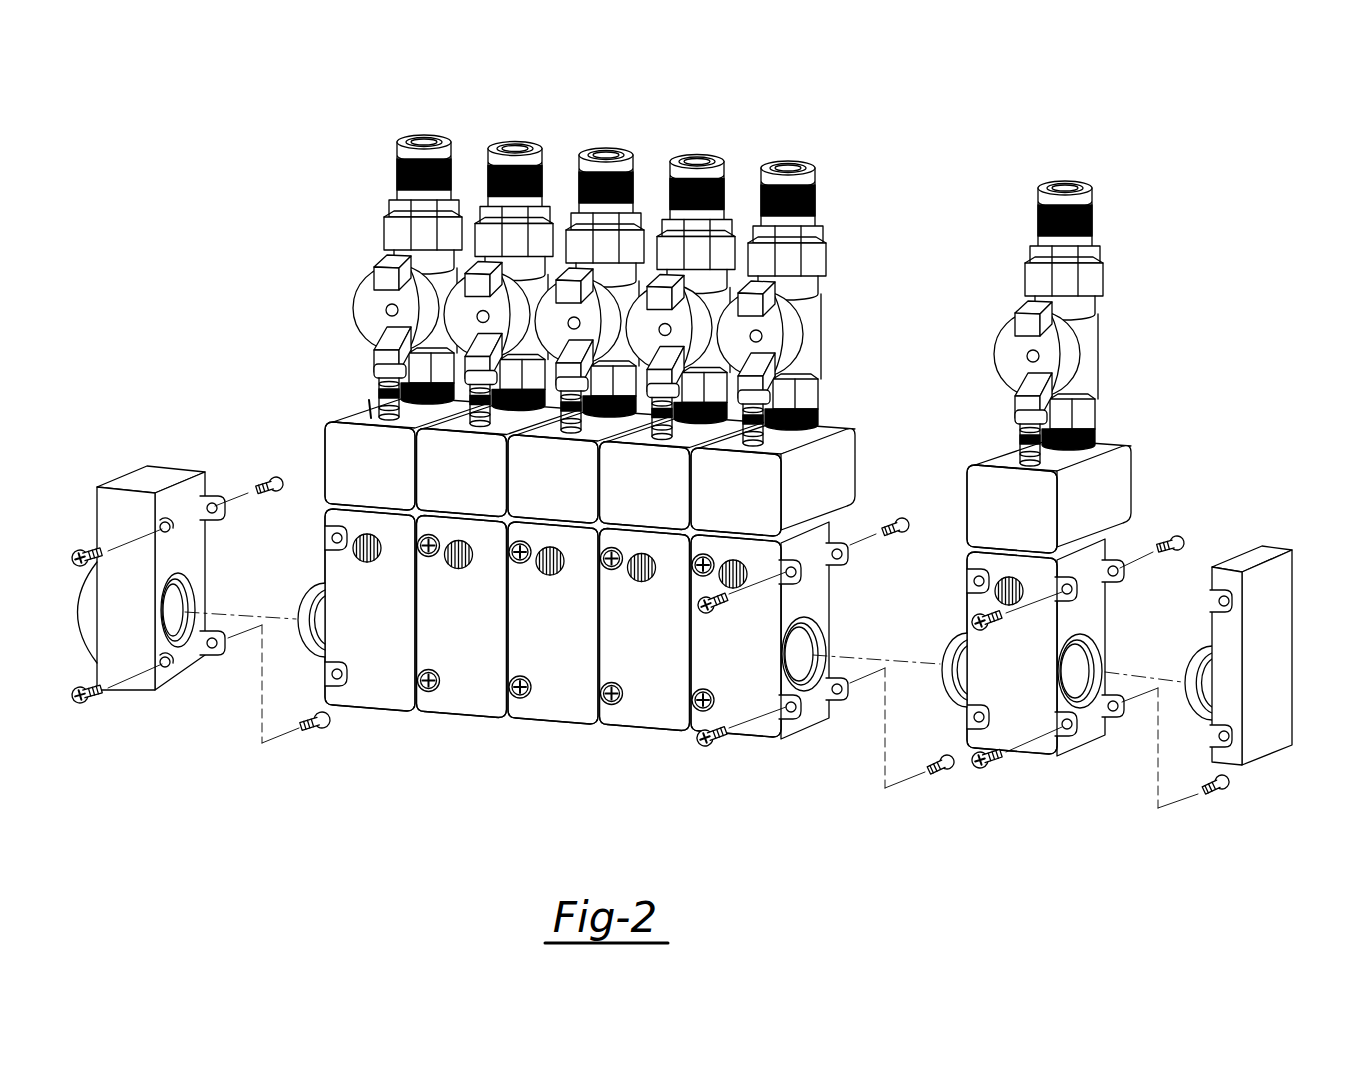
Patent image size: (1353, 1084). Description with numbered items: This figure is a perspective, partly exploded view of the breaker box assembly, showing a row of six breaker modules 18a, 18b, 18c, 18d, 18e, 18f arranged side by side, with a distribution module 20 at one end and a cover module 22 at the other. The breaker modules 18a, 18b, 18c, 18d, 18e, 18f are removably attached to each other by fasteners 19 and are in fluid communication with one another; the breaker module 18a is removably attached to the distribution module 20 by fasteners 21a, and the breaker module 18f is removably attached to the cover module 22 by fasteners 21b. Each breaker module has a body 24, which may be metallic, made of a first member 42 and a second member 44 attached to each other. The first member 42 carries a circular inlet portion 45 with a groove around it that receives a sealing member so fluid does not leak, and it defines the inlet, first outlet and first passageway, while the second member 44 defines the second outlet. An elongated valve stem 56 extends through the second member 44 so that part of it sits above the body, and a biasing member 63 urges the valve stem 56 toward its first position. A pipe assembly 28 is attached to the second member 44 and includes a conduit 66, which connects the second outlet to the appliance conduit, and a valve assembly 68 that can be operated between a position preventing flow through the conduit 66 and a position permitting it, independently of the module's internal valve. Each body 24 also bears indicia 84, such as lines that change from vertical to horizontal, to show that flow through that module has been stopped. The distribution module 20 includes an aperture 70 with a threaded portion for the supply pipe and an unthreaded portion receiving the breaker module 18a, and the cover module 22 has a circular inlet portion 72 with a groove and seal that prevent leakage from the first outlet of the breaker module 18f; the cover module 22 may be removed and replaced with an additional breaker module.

The breaker module 18a is at (395, 727).
The breaker module 18b is at (485, 734).
The breaker module 18c is at (567, 740).
The breaker module 18d is at (657, 747).
The breaker module 18e is at (781, 754).
The breaker module 18f is at (1084, 772).
The fasteners 19 is at (705, 797).
The distribution module 20 is at (164, 545).
The fasteners 21a is at (270, 477).
The fasteners 21b is at (1177, 536).
The cover module 22 is at (1255, 655).
The body 24 is at (741, 627).
The pipe assembly 28 is at (433, 124).
The first member 42 is at (696, 632).
The second member 44 is at (332, 432).
The inlet portion 45 is at (320, 610).
The valve stem 56 is at (383, 420).
The biasing member 63 is at (372, 400).
The conduit 66 is at (453, 225).
The valve assembly 68 is at (367, 320).
The aperture 70 is at (183, 627).
The inlet portion 72 is at (1203, 677).
The indicia 84 is at (365, 565).